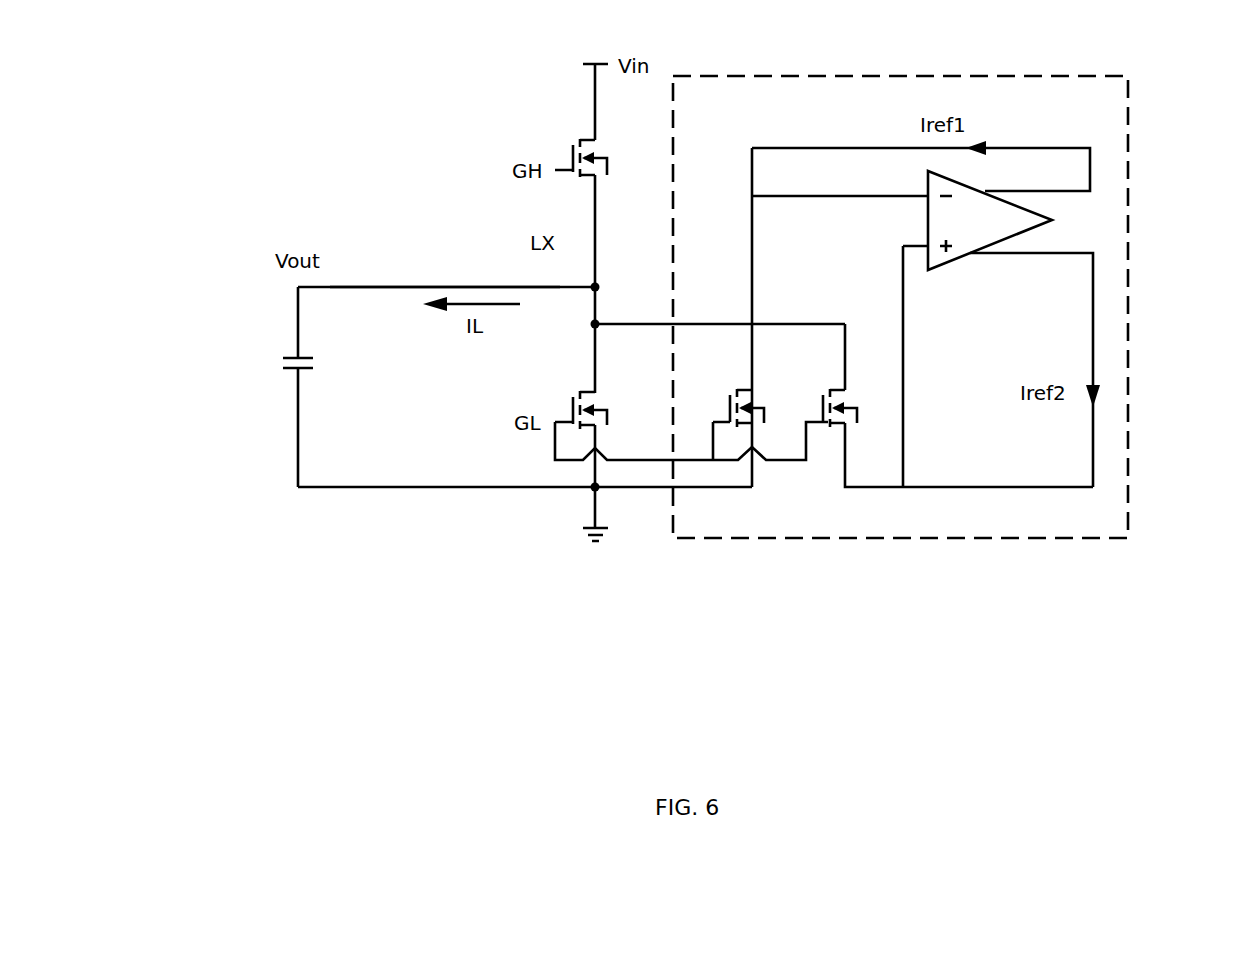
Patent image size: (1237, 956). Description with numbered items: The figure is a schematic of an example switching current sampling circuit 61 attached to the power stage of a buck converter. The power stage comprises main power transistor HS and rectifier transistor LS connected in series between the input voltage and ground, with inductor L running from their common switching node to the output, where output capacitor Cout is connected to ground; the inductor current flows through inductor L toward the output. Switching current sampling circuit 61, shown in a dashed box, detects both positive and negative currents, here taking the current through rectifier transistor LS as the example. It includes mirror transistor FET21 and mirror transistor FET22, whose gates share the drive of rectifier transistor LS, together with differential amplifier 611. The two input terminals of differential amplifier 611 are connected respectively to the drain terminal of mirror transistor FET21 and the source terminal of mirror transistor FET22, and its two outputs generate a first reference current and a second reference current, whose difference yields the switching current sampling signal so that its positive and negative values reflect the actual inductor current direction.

The switching current sampling circuit 61 is at (827, 535).
The differential amplifier 611 is at (955, 266).
The mirror transistor FET21 is at (719, 317).
The mirror transistor FET22 is at (930, 405).
The main power transistor HS is at (601, 158).
The rectifier transistor LS is at (600, 410).
The output capacitor Cout is at (331, 365).
The inductor L is at (445, 263).